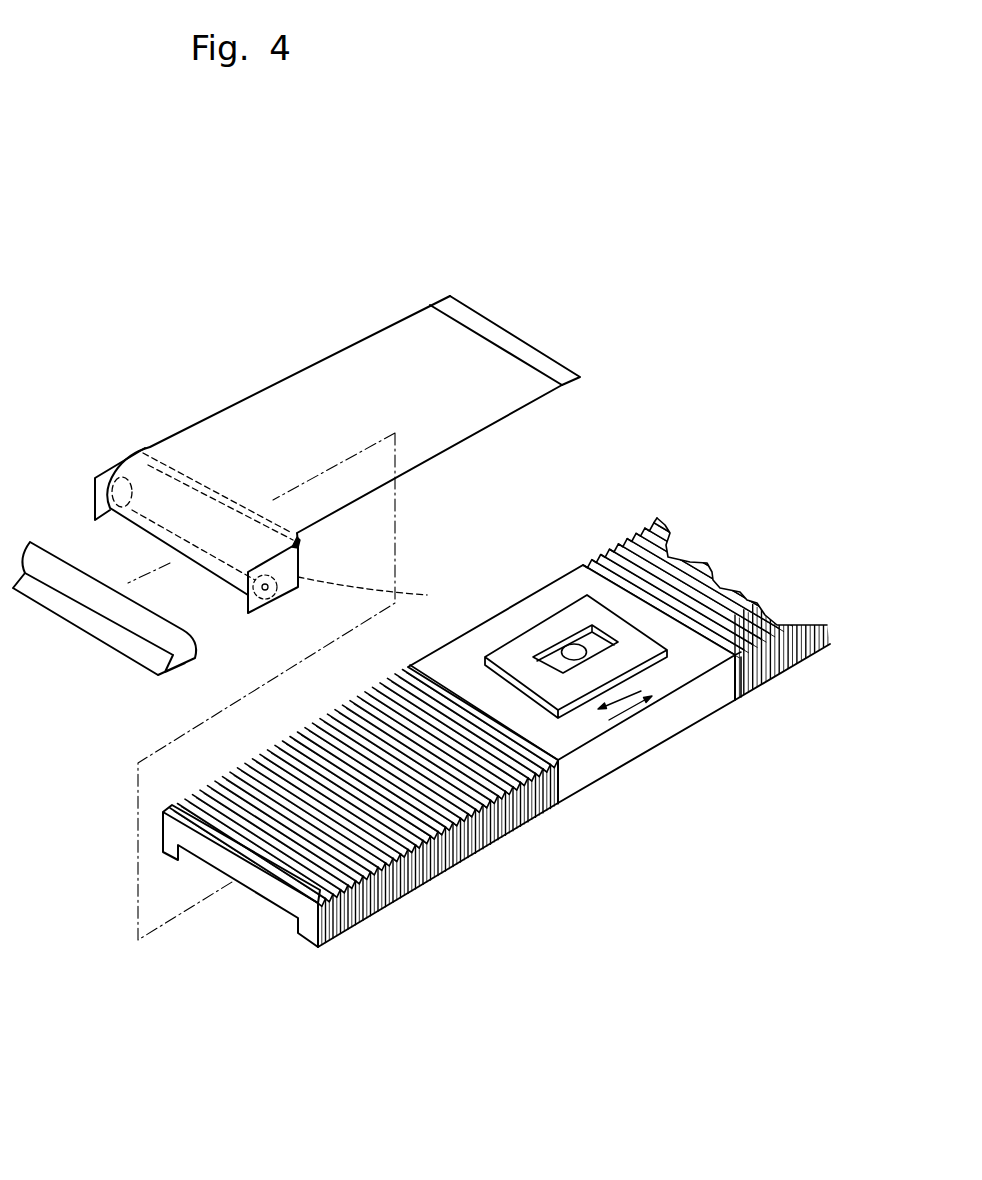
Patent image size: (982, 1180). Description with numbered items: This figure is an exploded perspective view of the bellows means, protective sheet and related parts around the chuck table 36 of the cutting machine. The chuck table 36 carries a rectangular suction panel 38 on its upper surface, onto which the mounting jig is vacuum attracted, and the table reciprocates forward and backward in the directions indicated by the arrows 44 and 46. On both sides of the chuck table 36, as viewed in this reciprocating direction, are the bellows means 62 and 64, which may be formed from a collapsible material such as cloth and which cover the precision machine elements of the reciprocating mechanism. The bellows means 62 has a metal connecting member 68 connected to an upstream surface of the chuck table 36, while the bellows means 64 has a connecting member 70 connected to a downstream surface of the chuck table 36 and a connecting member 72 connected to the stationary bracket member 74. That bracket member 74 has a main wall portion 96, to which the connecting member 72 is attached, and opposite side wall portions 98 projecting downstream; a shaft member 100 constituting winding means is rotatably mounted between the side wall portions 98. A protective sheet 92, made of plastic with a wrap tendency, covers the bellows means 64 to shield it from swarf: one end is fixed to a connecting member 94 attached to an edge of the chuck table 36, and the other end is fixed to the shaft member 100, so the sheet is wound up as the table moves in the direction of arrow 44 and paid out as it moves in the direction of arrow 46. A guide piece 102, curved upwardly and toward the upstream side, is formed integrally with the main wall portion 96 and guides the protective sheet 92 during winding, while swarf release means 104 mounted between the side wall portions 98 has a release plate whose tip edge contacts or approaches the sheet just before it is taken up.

The chuck table 36 is at (612, 771).
The suction panel 38 is at (543, 622).
The arrow 44 is at (625, 688).
The arrow 46 is at (613, 717).
The bellows means 62 is at (798, 668).
The bellows means 64 is at (453, 870).
The connecting member 68 is at (742, 684).
The connecting member 70 is at (552, 806).
The connecting member 72 is at (303, 935).
The stationary bracket member 74 is at (105, 470).
The protective sheet 92 is at (318, 363).
The connecting member 94 is at (573, 384).
The main wall portion 96 is at (298, 575).
The side wall portions 98 is at (95, 510).
The shaft member 100 is at (386, 589).
The guide piece 102 is at (300, 543).
The swarf release means 104 is at (90, 636).